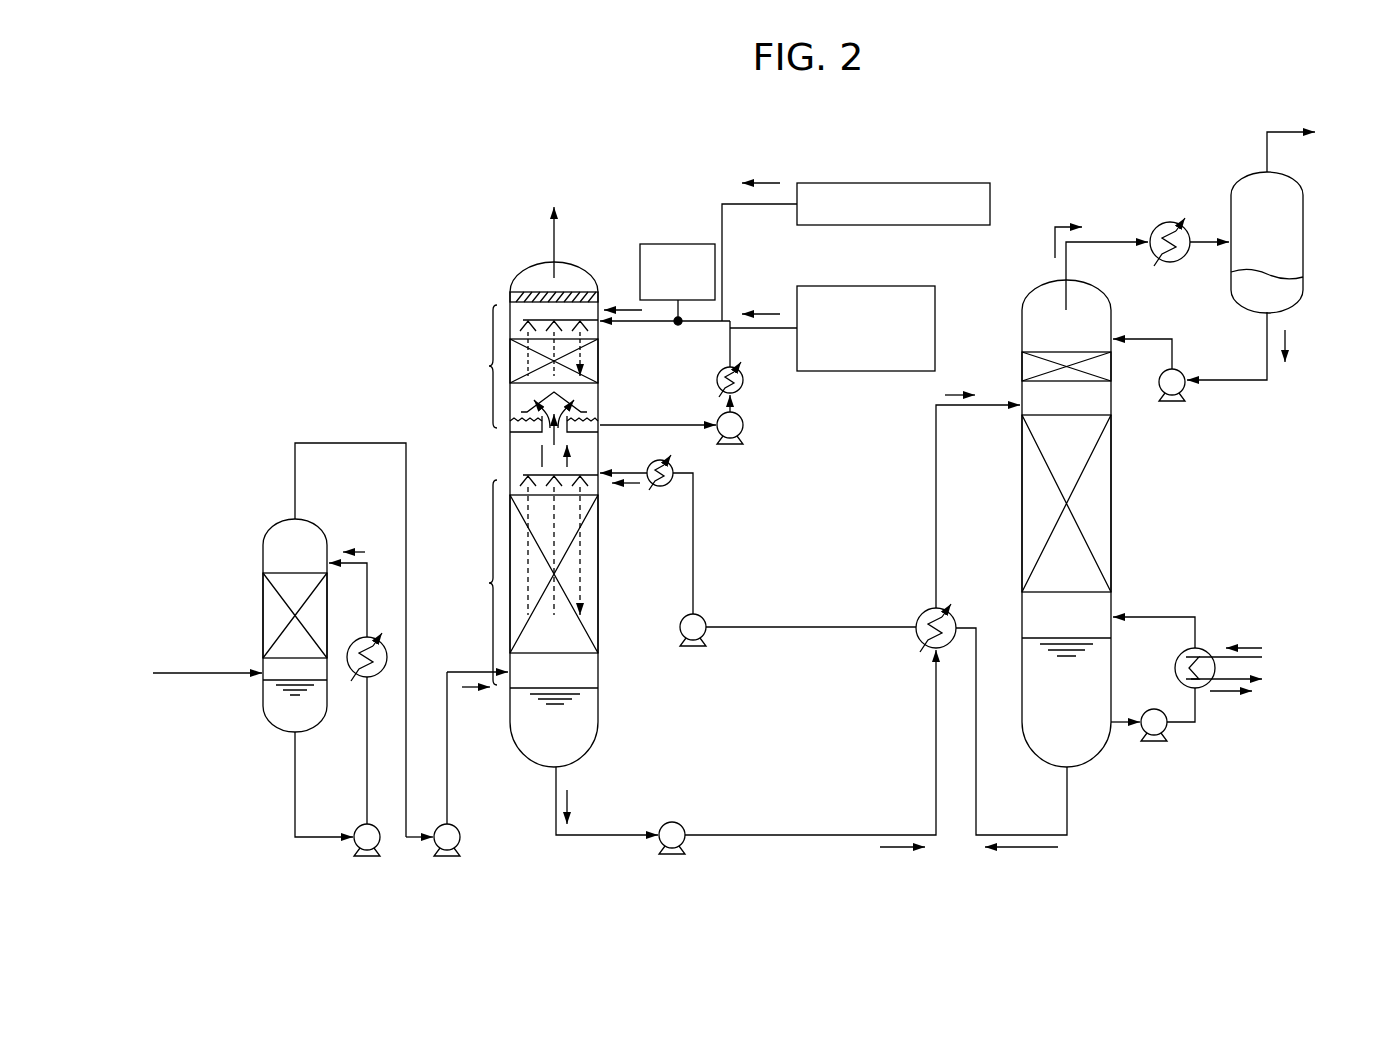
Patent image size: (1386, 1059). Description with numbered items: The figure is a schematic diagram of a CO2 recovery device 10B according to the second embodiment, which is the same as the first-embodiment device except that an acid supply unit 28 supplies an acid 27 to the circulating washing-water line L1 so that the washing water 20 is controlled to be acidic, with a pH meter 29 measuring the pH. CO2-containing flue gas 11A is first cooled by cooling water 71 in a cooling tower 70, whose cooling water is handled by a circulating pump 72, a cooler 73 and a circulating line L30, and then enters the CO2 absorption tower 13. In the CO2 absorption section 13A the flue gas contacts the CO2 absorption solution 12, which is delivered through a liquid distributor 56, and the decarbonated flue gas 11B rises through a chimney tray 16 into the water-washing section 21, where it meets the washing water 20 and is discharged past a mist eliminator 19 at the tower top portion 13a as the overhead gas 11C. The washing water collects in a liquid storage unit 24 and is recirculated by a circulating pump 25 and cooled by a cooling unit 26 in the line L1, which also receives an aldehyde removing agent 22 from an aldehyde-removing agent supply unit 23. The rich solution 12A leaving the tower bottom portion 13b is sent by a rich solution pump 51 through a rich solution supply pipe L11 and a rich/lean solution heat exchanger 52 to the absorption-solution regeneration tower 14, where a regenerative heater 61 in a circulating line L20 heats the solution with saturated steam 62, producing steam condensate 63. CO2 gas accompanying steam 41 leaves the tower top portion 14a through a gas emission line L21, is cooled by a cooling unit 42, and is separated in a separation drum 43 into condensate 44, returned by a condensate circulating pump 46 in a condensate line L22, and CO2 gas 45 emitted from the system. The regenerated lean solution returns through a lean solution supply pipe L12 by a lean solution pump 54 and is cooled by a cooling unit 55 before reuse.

The CO2 recovery device 10B is at (888, 152).
The CO2-containing flue gas 11A is at (216, 677).
The decarbonated flue gas 11B is at (552, 440).
The overhead stream 11C is at (548, 240).
The CO2 absorption solution 12 is at (628, 483).
The rich solution 12A is at (950, 392).
The CO2 absorption tower 13 is at (496, 294).
The tower top portion 13a is at (566, 264).
The CO2 absorption section 13A is at (488, 583).
The tower bottom portion 13b is at (598, 745).
The absorption-solution regeneration tower 14 is at (1122, 500).
The tower top portion 14a is at (1030, 292).
The chimney tray 16 is at (534, 390).
The mist eliminator 19 is at (530, 292).
The washing water 20 is at (628, 300).
The water-washing section 21 is at (488, 366).
The aldehyde removing agent 22 is at (770, 312).
The aldehyde-removing agent supply unit 23 is at (918, 286).
The liquid storage unit 24 is at (598, 418).
The circulating pump 25 is at (745, 427).
The cooling unit 26 is at (716, 380).
The acid 27 is at (768, 180).
The acid supply unit 28 is at (966, 183).
The pH meter 29 is at (684, 244).
The CO2 gas accompanying steam 41 is at (1058, 225).
The cooling unit 42 is at (1170, 222).
The separation drum 43 is at (1303, 241).
The condensate 44 is at (1289, 348).
The CO2 gas 45 is at (1270, 130).
The condensate circulating pump 46 is at (1178, 368).
The rich solution pump 51 is at (662, 850).
The rich/lean solution heat exchanger 52 is at (920, 612).
The lean solution pump 54 is at (704, 620).
The cooling unit 55 is at (675, 466).
The liquid distributor 56 is at (604, 470).
The regenerative heater 61 is at (1203, 650).
The saturated steam 62 is at (1250, 646).
The steam condensate 63 is at (1228, 695).
The cooling tower 70 is at (254, 530).
The cooling water 71 is at (360, 550).
The circulating pump 72 is at (357, 850).
The cooler 73 is at (360, 682).
The circulating washing-water line L1 is at (736, 372).
The rich solution supply pipe L11 is at (635, 843).
The lean solution supply pipe L12 is at (975, 795).
The circulating line L20 is at (1150, 615).
The gas emission line L21 is at (1206, 240).
The condensate line L22 is at (1210, 382).
The circulating line L30 is at (293, 830).